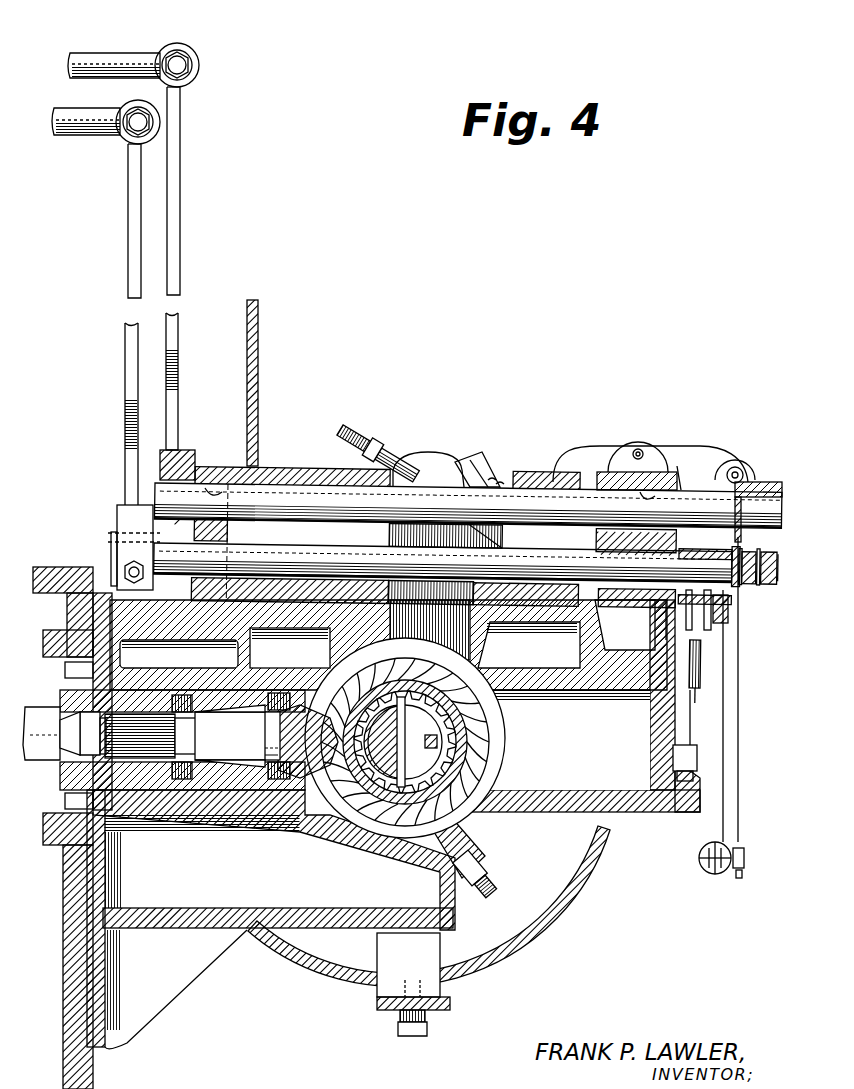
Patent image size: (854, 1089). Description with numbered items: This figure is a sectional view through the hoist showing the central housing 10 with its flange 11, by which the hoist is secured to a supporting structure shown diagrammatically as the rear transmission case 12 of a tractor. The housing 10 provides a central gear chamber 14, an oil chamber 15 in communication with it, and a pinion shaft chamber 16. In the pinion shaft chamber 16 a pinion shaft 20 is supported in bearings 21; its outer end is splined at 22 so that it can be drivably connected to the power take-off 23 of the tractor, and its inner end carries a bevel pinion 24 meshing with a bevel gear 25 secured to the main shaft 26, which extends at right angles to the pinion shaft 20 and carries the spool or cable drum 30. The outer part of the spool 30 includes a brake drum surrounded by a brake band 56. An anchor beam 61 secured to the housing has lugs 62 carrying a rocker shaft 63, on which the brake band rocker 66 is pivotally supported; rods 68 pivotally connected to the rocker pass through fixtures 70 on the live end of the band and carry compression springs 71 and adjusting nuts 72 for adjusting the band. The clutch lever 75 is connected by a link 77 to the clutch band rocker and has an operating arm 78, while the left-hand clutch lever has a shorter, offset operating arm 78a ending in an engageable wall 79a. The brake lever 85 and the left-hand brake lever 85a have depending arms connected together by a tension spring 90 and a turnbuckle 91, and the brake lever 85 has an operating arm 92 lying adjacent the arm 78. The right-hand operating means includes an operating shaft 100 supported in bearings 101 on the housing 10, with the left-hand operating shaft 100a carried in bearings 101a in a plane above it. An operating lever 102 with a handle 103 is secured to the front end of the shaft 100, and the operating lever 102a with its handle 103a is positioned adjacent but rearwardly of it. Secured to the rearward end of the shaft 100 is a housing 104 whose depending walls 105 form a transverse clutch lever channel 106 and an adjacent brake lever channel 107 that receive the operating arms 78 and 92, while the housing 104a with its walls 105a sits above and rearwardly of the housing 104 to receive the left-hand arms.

The central housing 10 is at (630, 820).
The flange 11 is at (100, 595).
The rear transmission case 12 is at (48, 568).
The central gear chamber 14 is at (495, 748).
The oil chamber 15 is at (628, 778).
The pinion shaft chamber 16 is at (222, 772).
The pinion shaft 20 is at (256, 734).
The bearings 21 is at (182, 780).
The splined end 22 is at (138, 760).
The power take-off 23 is at (70, 720).
The bevel pinion 24 is at (312, 775).
The bevel gear 25 is at (445, 770).
The main shaft 26 is at (440, 728).
The spool or cable drum 30 is at (540, 870).
The brake band 56 is at (512, 942).
The anchor beam 61 is at (682, 466).
The lugs 62 is at (662, 458).
The rocker shaft 63 is at (632, 460).
The brake band rocker 66 is at (582, 446).
The rods 68 is at (350, 425).
The fixtures 70 is at (432, 466).
The compression springs 71 is at (485, 470).
The adjusting nuts 72 is at (390, 450).
The clutch lever 75 is at (688, 684).
The link 77 is at (748, 466).
The operating arm 78 is at (660, 645).
The operating arm 78a is at (746, 580).
The engageable wall 79a is at (745, 548).
The brake lever 85 is at (738, 690).
The brake lever 85a is at (762, 576).
The tension spring 90 is at (705, 872).
The turnbuckle 91 is at (727, 842).
The operating arm 92 is at (730, 625).
The operating shaft 100 is at (322, 548).
The operating shaft 100a is at (278, 492).
The bearings 101 is at (222, 548).
The bearings 101a is at (212, 486).
The operating lever 102 is at (127, 340).
The operating lever 102a is at (180, 340).
The handle 103 is at (82, 136).
The handle 103a is at (95, 52).
The housing 104 is at (742, 615).
The housing 104a is at (760, 482).
The depending walls 105 is at (704, 655).
The depending walls 105a is at (762, 560).
The clutch lever channel 106 is at (686, 612).
The brake lever channel 107 is at (704, 620).